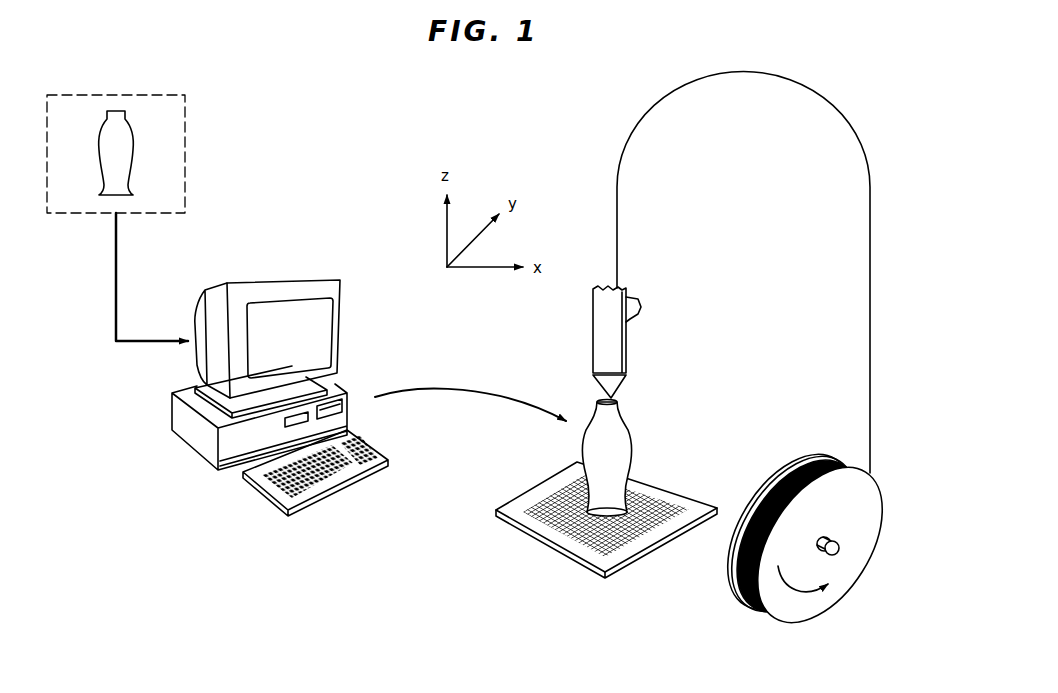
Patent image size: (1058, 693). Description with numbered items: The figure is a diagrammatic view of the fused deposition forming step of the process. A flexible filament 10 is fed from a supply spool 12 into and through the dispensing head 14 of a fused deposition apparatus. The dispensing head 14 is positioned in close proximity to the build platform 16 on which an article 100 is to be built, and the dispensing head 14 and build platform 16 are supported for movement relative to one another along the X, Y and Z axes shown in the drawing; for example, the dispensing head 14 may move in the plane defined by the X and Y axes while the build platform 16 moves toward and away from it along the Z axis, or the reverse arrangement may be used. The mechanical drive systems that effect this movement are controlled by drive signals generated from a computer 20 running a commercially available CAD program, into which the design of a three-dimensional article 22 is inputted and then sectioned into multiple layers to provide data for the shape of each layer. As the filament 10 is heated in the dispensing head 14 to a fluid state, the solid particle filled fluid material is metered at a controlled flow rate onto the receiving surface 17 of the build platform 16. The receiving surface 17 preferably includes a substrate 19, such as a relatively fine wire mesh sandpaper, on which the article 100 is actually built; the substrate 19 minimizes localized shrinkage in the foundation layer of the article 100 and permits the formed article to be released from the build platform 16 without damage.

The flexible filament 10 is at (627, 136).
The supply spool 12 is at (867, 502).
The dispensing head 14 is at (633, 385).
The build platform 16 is at (575, 565).
The receiving surface 17 is at (699, 508).
The substrate 19 is at (665, 519).
The computer 20 is at (201, 454).
The three-dimensional article design 22 is at (123, 147).
The article 100 is at (628, 417).